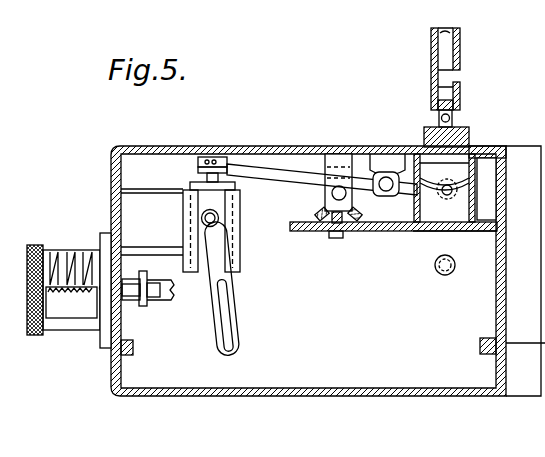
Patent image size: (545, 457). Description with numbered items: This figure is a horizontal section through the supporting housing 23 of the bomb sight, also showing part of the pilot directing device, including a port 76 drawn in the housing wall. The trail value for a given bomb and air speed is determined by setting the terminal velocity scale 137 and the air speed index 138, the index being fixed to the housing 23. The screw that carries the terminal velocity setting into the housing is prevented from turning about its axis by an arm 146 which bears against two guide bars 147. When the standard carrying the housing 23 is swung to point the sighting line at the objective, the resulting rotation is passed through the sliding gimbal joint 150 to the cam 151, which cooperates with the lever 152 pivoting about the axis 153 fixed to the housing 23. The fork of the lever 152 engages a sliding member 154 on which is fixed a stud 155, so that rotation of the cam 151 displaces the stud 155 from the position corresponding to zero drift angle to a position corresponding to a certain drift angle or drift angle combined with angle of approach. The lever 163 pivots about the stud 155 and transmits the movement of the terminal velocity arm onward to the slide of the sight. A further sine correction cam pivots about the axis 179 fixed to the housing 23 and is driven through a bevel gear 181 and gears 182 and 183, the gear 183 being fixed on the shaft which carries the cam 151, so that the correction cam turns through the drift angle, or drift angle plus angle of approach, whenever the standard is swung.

The housing 23 is at (300, 397).
The vent port 76 is at (443, 278).
The terminal velocity scale 137 is at (55, 250).
The air speed index 138 is at (72, 312).
The arm 146 is at (172, 292).
The guide bars 147 is at (157, 302).
The sliding gimbal joint 150 is at (432, 52).
The cam 151 is at (447, 224).
The lever 152 is at (283, 165).
The axis 153 is at (386, 172).
The sliding member 154 is at (228, 210).
The stud 155 is at (200, 219).
The lever 163 is at (238, 310).
The axis 179 is at (318, 190).
The bevel gear 181 is at (318, 217).
The gear 182 is at (300, 232).
The gear 183 is at (408, 232).